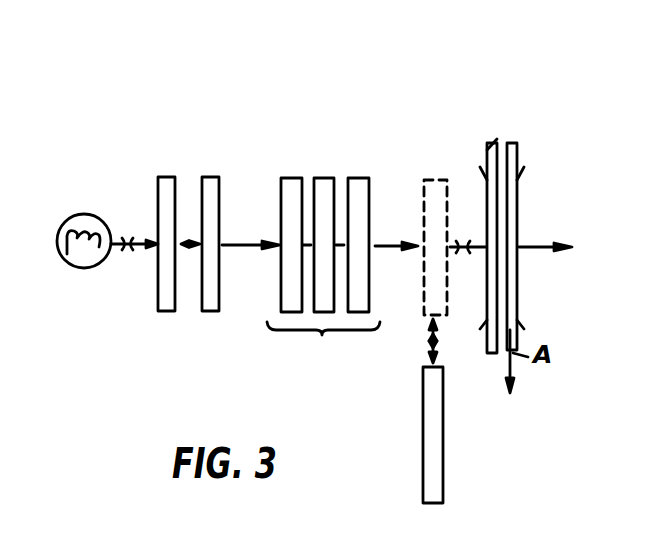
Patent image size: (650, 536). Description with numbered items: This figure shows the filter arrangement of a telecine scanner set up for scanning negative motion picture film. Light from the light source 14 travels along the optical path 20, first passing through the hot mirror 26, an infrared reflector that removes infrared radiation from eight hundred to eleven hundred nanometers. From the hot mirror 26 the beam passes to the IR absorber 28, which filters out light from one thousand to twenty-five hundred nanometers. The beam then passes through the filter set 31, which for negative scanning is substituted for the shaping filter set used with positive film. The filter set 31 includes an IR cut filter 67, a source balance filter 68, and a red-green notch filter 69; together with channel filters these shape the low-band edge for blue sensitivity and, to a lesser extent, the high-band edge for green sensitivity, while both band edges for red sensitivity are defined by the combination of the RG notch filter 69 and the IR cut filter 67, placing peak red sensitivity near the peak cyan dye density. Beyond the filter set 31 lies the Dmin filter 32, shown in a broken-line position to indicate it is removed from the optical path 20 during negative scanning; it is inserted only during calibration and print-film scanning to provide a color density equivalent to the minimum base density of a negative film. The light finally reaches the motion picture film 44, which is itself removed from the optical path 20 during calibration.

The light source 14 is at (96, 266).
The hot mirror 26 is at (166, 313).
The IR absorber 28 is at (210, 313).
The source balance filter 68 is at (293, 177).
The IR cut filter 67 is at (322, 177).
The RG notch filter 69 is at (360, 177).
The filter set 31 is at (322, 335).
The optical path 20 is at (390, 242).
The Dmin filter 32 is at (428, 179).
The motion picture film 44 is at (507, 143).